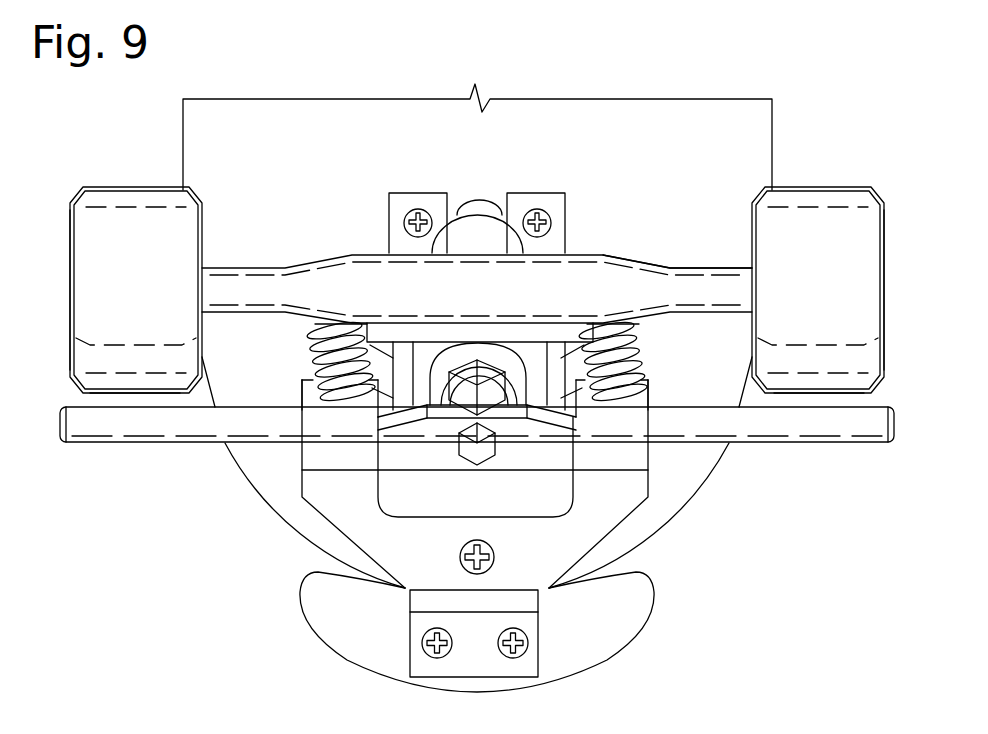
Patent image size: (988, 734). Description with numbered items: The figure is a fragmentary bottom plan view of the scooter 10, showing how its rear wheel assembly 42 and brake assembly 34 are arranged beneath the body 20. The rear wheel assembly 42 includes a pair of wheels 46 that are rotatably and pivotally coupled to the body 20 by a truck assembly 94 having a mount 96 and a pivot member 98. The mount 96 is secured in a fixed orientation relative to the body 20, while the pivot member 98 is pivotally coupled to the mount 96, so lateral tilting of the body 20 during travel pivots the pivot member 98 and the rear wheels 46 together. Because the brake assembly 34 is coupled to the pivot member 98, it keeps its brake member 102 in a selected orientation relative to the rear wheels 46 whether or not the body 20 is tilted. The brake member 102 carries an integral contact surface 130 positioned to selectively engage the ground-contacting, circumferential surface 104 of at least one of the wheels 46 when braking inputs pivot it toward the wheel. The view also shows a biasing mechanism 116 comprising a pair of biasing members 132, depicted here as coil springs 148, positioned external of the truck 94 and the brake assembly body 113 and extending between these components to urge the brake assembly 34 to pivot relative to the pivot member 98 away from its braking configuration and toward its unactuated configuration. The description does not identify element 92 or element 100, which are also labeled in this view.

The scooter 10 is at (840, 94).
The body 20 is at (786, 147).
The brake assembly 34 is at (705, 588).
The rear wheel assembly 42 is at (62, 262).
The wheels 46 is at (65, 322).
The wheel 92 is at (886, 298).
The truck assembly 94 is at (614, 250).
The mount 96 is at (565, 215).
The pivot member 98 is at (657, 265).
The bumper pad 100 is at (659, 612).
The brake member 102 is at (160, 448).
The ground-contacting surface 104 is at (130, 385).
The brake assembly body 113 is at (628, 524).
The biasing mechanism 116 is at (665, 372).
The contact surface 130 is at (92, 407).
The biasing members 132 is at (305, 365).
The coil springs 148 is at (315, 342).